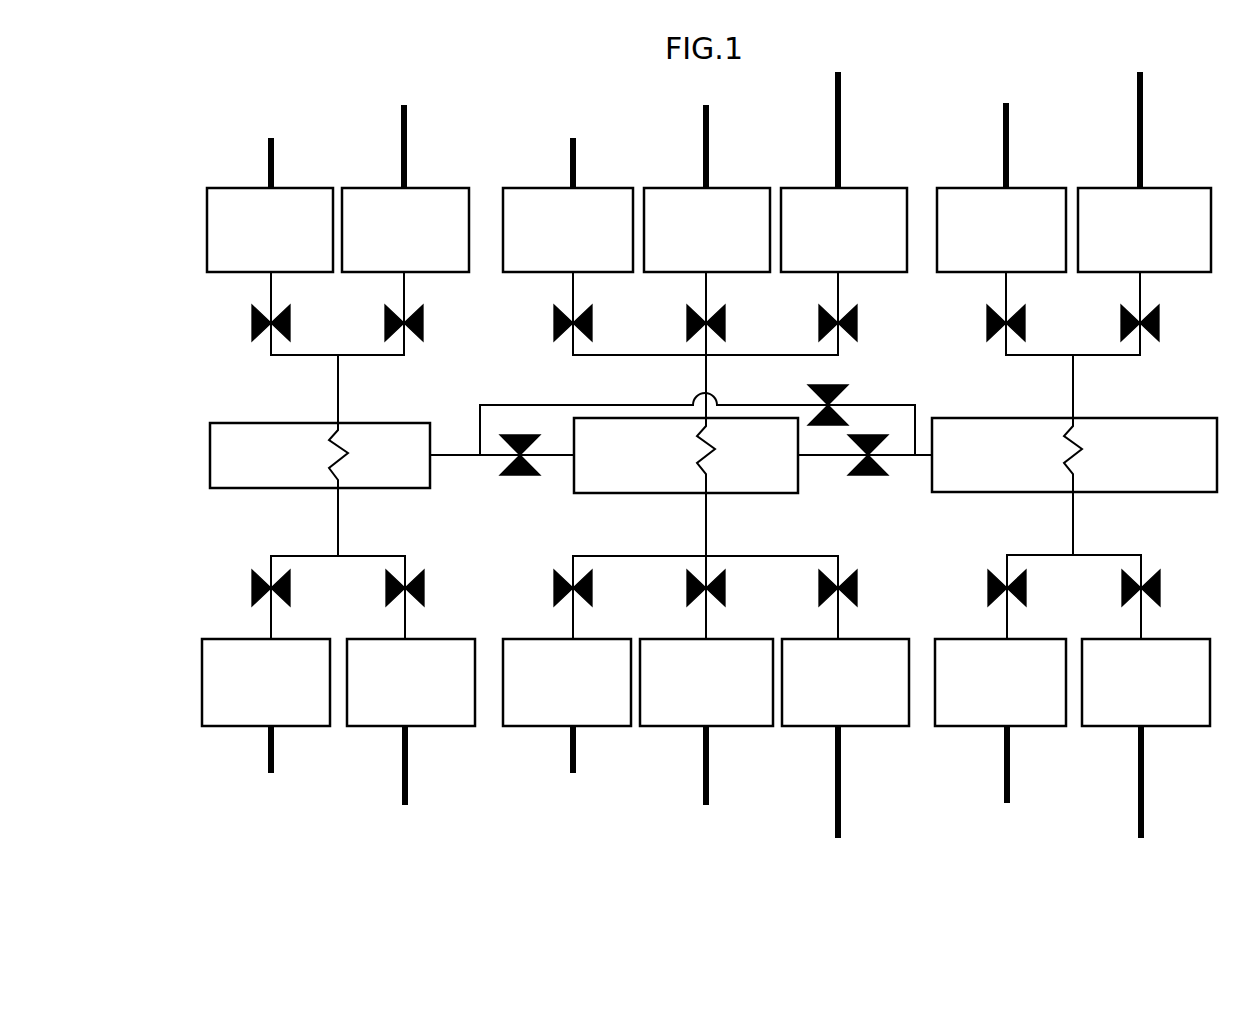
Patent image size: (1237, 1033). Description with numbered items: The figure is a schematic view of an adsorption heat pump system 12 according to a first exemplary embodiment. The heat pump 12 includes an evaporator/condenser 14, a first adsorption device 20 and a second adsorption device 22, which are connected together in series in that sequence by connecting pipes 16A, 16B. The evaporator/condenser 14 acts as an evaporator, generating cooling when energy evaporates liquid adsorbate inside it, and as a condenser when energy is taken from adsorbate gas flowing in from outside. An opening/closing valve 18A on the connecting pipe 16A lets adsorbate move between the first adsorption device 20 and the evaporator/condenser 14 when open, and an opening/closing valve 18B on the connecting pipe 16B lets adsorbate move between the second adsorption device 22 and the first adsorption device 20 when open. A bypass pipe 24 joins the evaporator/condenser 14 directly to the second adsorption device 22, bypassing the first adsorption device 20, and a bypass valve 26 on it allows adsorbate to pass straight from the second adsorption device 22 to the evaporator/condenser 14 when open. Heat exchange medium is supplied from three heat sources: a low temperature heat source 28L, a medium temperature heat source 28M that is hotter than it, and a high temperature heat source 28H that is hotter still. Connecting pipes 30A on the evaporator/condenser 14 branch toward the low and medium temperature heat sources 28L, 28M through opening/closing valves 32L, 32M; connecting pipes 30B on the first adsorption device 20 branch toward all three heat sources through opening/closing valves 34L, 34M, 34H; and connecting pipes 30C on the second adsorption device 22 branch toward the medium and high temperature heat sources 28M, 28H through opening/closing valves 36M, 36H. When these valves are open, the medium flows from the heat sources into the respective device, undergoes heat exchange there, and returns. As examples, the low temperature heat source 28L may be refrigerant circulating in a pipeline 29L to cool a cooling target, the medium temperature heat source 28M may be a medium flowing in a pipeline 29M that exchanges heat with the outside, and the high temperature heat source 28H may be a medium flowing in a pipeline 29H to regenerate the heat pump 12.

The adsorption heat pump system 12 is at (1179, 391).
The evaporator/condenser 14 is at (271, 498).
The connecting pipe 16A is at (548, 457).
The connecting pipe 16B is at (820, 457).
The opening/closing valve 18A is at (511, 482).
The opening/closing valve 18B is at (871, 484).
The first adsorption device 20 is at (628, 502).
The second adsorption device 22 is at (1165, 498).
The bypass pipe 24 is at (537, 404).
The bypass valve 26 is at (851, 399).
The low temperature heat source 28L is at (226, 187).
The medium temperature heat source 28M is at (363, 187).
The high temperature heat source 28H is at (790, 187).
The pipeline 29L is at (267, 737).
The pipeline 29M is at (403, 737).
The pipeline 29H is at (837, 765).
The connecting pipe 30A is at (335, 398).
The connecting pipe 30B is at (705, 373).
The connecting pipe 30C is at (1073, 393).
The opening/closing valve 32L is at (238, 329).
The opening/closing valve 32M is at (436, 329).
The opening/closing valve 34L is at (635, 308).
The opening/closing valve 34M is at (770, 308).
The opening/closing valve 34H is at (868, 332).
The opening/closing valve 36M is at (981, 330).
The opening/closing valve 36H is at (1207, 308).